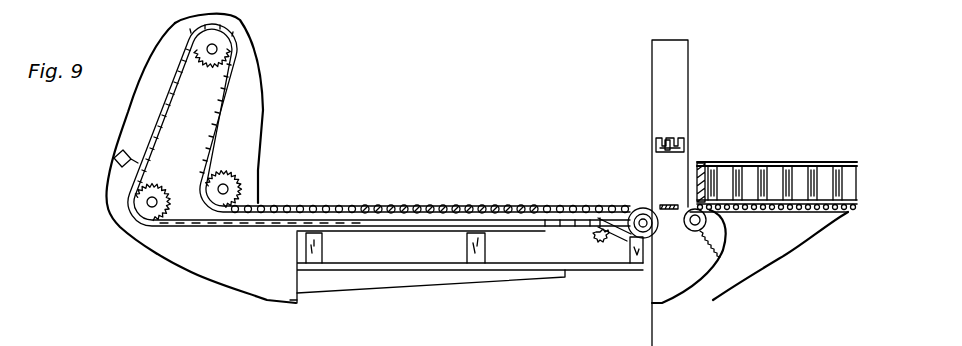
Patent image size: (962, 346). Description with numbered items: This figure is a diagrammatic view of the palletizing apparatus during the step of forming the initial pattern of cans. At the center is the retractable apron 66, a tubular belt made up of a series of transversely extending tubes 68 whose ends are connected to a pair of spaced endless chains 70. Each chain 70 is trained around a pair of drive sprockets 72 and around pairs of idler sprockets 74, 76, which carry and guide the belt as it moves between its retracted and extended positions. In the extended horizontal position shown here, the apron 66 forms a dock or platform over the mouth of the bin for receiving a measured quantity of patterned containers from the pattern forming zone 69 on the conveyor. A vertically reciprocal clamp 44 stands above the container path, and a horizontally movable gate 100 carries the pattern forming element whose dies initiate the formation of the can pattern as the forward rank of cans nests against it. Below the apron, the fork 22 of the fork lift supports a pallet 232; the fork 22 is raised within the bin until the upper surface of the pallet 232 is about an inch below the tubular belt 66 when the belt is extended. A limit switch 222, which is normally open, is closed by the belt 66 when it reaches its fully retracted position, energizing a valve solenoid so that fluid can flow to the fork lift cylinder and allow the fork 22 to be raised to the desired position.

The drive sprockets 72 is at (219, 49).
The idler sprockets 74 is at (166, 193).
The idler sprockets 76 is at (238, 182).
The limit switch 222 is at (114, 158).
The endless chains 70 is at (313, 206).
The retractable apron 66 is at (412, 187).
The transversely extending tubes 68 is at (454, 207).
The vertically reciprocal clamp 44 is at (710, 90).
The pattern forming zone 69 is at (795, 150).
The horizontally movable gate 100 is at (703, 161).
The fork 22 is at (425, 278).
The pallet 232 is at (616, 276).